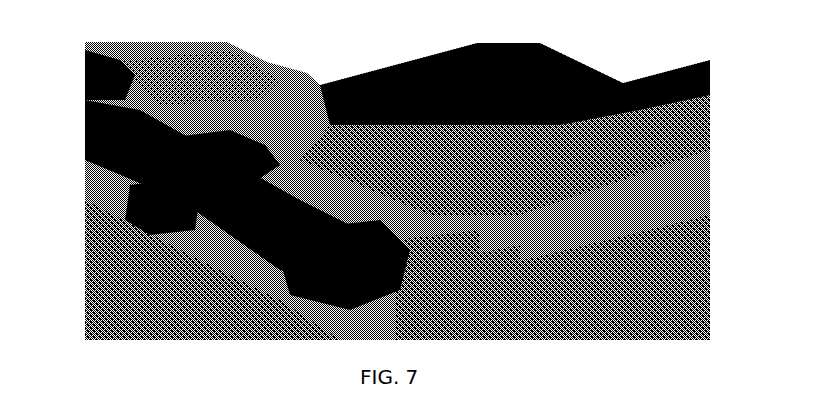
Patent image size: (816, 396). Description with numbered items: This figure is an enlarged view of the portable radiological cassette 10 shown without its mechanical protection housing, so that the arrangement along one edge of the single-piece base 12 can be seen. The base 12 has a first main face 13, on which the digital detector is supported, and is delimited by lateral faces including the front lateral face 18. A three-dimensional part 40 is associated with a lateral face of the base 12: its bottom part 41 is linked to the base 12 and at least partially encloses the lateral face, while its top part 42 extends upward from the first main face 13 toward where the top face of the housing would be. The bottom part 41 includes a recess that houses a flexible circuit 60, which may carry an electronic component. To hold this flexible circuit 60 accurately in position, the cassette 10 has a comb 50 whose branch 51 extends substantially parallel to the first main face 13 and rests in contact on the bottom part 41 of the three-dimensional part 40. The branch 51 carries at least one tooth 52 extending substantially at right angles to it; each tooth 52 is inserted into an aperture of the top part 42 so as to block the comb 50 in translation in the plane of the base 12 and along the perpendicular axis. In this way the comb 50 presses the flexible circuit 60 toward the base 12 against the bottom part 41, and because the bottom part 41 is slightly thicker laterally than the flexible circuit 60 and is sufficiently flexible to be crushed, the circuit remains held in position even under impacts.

The portable radiological cassette 10 is at (245, 31).
The base 12 is at (456, 284).
The first main face 13 is at (478, 245).
The front lateral face 18 is at (490, 270).
The second three-dimensional part 40 is at (322, 300).
The bottom part 41 is at (397, 302).
The top part 42 is at (400, 258).
The comb 50 is at (185, 240).
The branch 51 is at (145, 150).
The tooth 52 is at (130, 92).
The flexible circuit 60 is at (277, 260).